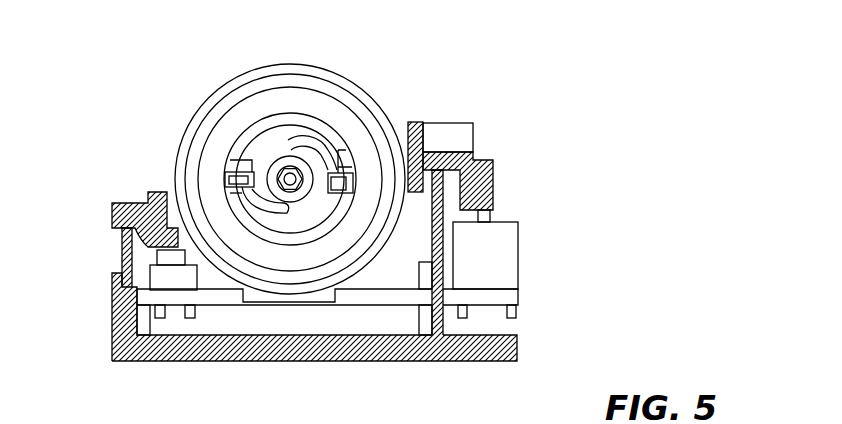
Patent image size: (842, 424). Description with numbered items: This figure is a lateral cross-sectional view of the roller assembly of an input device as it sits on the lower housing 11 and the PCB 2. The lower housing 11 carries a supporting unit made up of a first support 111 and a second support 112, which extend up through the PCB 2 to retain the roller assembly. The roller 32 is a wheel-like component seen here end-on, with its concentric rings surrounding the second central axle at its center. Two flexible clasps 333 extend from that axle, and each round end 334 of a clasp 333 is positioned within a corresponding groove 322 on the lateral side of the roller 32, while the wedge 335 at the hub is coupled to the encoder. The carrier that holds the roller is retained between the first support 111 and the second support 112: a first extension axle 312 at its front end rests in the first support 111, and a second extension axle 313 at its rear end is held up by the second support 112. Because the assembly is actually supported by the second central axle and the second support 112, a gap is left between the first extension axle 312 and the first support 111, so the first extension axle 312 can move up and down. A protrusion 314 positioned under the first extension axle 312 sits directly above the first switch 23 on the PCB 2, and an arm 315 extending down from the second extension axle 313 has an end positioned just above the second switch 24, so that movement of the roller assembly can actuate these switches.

The PCB 2 is at (513, 293).
The lower housing 11 is at (500, 347).
The first switch 23 is at (175, 262).
The second switch 24 is at (500, 250).
The roller 32 is at (298, 67).
The first support 111 is at (122, 200).
The second support 112 is at (443, 193).
The first extension axle 312 is at (112, 217).
The second extension axle 313 is at (443, 123).
The protrusion 314 is at (143, 253).
The arm 315 is at (493, 174).
The groove 322 is at (339, 150).
The flexible clasp 333 is at (291, 136).
The round end 334 is at (356, 178).
The wedge 335 is at (281, 171).